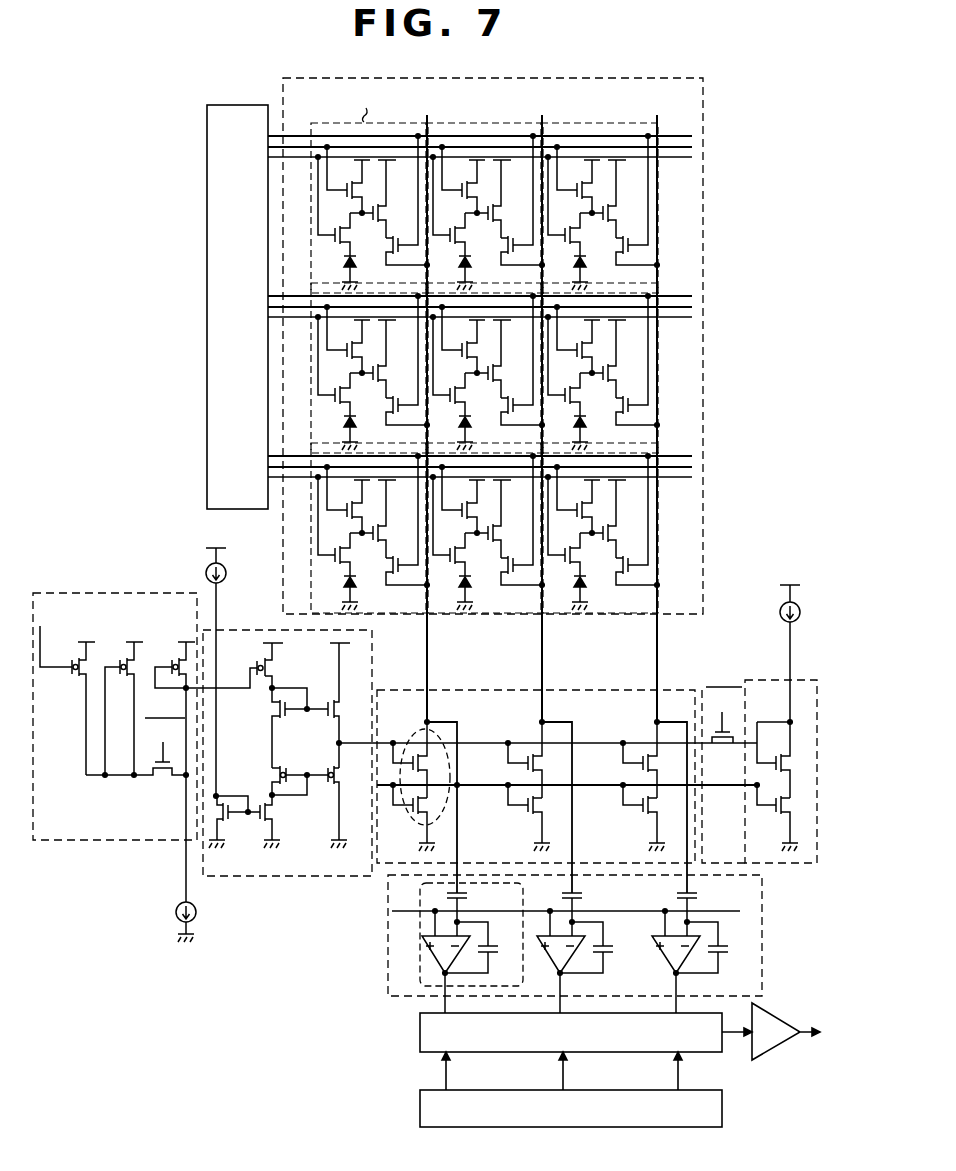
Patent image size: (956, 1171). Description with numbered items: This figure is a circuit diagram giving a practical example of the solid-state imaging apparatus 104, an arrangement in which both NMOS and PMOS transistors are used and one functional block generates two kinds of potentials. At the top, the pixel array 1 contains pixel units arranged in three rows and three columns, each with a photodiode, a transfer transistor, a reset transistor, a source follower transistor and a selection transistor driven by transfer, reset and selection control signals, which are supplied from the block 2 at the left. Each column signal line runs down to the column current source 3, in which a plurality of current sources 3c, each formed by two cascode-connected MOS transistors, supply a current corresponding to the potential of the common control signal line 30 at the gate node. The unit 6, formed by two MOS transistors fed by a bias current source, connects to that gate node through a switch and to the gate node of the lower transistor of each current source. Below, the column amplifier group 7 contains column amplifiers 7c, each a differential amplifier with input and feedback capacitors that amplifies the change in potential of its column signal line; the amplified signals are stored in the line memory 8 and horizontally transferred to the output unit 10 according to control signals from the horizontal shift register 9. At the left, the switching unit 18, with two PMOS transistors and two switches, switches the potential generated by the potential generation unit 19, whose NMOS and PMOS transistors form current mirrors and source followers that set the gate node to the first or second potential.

The solid-state imaging apparatus 104 is at (148, 136).
The pixel array 1 is at (703, 188).
The vertical scanning circuit 2 is at (245, 105).
The column current source 3 is at (548, 768).
The common control signal line 30 is at (598, 743).
The current source 3c is at (407, 826).
The unit 6 is at (763, 680).
The column amplifier group 7 is at (552, 944).
The column amplifier 7c is at (420, 940).
The line memory 8 is at (420, 1031).
The horizontal shift register 9 is at (722, 1108).
The output unit 10 is at (777, 1015).
The switching unit 18 is at (131, 592).
The potential generation unit 19 is at (255, 630).